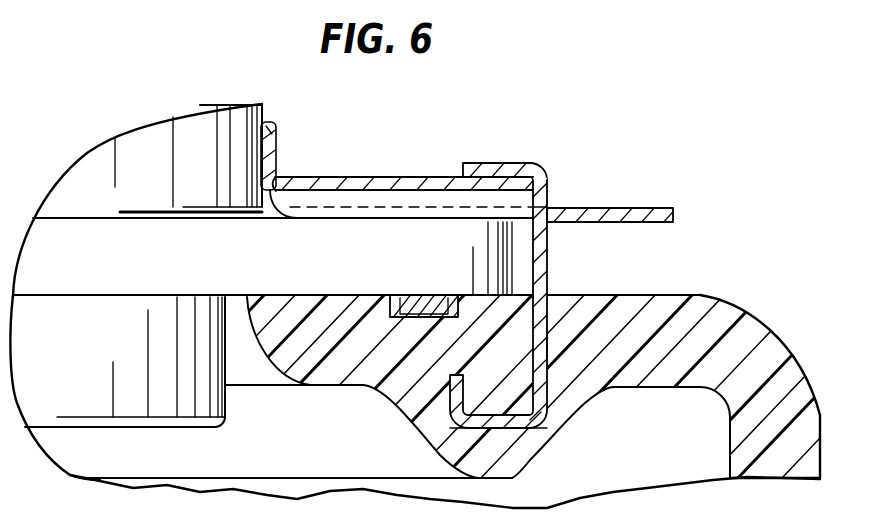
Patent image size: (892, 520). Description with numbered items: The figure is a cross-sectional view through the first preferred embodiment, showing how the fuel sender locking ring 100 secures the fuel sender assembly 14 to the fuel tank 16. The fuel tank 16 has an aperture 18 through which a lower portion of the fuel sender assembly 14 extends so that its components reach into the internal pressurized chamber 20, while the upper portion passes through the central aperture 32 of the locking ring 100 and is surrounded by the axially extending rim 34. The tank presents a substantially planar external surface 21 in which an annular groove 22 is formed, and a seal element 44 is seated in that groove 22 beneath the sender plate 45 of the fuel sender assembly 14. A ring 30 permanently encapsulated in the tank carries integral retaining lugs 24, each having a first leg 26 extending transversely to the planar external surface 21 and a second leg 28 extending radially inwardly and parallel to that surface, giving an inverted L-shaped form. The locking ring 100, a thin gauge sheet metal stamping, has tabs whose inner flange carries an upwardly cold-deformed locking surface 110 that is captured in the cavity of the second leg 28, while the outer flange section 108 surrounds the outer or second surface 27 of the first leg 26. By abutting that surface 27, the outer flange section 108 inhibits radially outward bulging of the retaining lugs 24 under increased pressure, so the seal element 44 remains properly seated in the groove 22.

The fuel sender assembly 14 is at (103, 173).
The fuel tank 16 is at (710, 296).
The aperture 18 is at (253, 297).
The internal pressurized chamber 20 is at (363, 431).
The planar external surface 21 is at (623, 295).
The annular groove 22 is at (447, 295).
The retaining lug 24 is at (549, 278).
The first leg 26 is at (542, 345).
The outer or second surface 27 is at (545, 207).
The second leg 28 is at (497, 160).
The ring 30 is at (548, 390).
The central aperture 32 is at (260, 124).
The rim 34 is at (267, 128).
The seal element 44 is at (413, 295).
The sender plate 45 is at (310, 272).
The fuel sender locking ring 100 is at (363, 158).
The outer flange section 108 is at (640, 207).
The locking surface or engaging means 110 is at (433, 197).